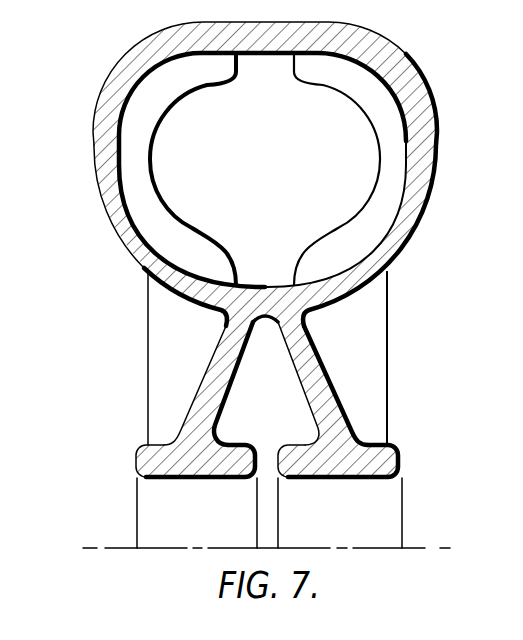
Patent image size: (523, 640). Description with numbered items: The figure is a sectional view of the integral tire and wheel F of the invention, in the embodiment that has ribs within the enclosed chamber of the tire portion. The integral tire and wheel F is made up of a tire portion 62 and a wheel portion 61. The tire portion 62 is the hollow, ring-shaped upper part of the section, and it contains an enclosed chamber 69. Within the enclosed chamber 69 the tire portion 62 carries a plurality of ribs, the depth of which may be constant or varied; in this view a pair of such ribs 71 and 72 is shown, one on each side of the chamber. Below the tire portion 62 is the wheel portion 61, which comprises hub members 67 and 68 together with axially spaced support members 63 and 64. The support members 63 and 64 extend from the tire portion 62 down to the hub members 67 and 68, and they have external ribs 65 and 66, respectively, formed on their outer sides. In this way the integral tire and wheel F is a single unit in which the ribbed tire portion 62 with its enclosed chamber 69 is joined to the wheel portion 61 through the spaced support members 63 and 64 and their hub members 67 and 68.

The integral tire and wheel F is at (407, 72).
The wheel portion 61 is at (388, 293).
The tire portion 62 is at (126, 80).
The support member 63 is at (203, 415).
The support member 64 is at (315, 390).
The external rib 65 is at (175, 332).
The external rib 66 is at (345, 350).
The hub member 67 is at (158, 460).
The hub member 68 is at (387, 457).
The enclosed chamber 69 is at (244, 149).
The rib 71 is at (145, 188).
The rib 72 is at (372, 203).